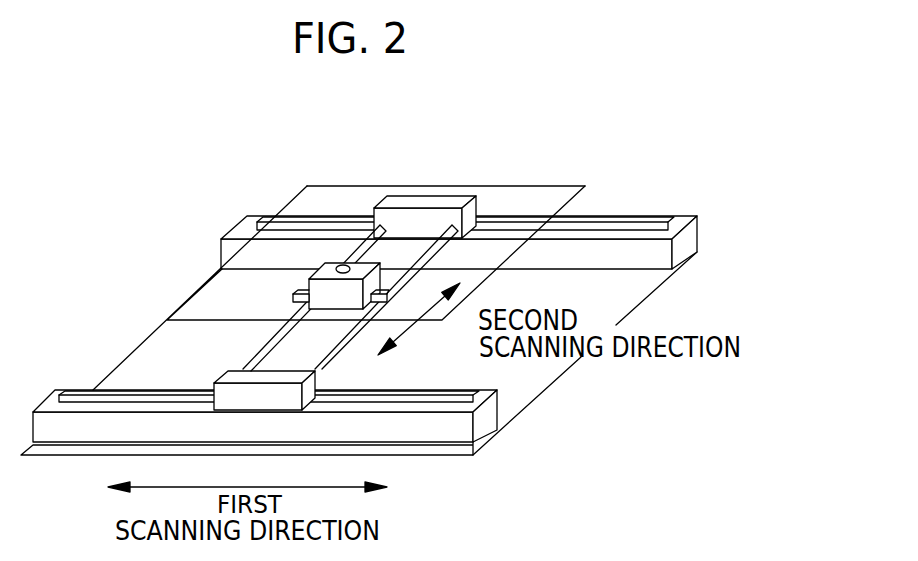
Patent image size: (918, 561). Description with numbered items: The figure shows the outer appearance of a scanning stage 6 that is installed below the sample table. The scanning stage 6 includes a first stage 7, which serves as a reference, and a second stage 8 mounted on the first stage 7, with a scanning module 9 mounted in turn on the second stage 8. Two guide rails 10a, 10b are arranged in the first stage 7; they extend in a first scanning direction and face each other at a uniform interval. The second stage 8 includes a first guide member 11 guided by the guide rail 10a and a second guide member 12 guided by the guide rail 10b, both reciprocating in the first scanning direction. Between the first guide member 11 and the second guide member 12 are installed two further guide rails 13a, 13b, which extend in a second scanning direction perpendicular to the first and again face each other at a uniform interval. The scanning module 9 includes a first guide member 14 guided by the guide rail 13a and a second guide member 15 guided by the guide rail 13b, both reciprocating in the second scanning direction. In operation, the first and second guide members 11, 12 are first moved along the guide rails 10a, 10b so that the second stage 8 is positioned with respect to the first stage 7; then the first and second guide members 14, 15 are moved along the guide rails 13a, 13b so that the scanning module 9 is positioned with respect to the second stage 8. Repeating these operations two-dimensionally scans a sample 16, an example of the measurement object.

The scanning stage 6 is at (632, 127).
The first stage 7 is at (618, 214).
The second stage 8 is at (487, 203).
The scanning module 9 is at (323, 267).
The guide rail 10a is at (460, 391).
The guide rail 10b is at (662, 217).
The first guide member 11 is at (222, 378).
The second guide member 12 is at (417, 202).
The guide rail 13a is at (262, 347).
The guide rail 13b is at (333, 351).
The first guide member 14 is at (293, 295).
The second guide member 15 is at (397, 290).
The sample 16 is at (332, 186).